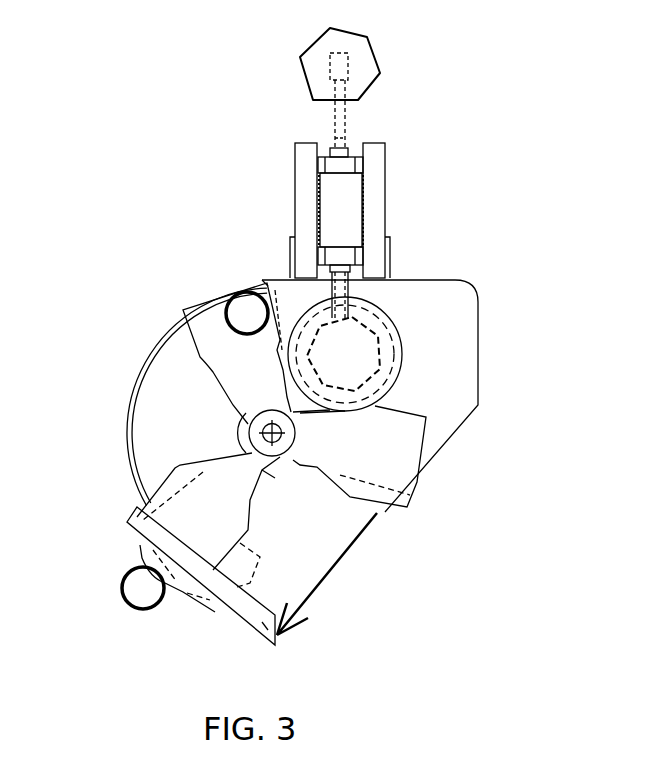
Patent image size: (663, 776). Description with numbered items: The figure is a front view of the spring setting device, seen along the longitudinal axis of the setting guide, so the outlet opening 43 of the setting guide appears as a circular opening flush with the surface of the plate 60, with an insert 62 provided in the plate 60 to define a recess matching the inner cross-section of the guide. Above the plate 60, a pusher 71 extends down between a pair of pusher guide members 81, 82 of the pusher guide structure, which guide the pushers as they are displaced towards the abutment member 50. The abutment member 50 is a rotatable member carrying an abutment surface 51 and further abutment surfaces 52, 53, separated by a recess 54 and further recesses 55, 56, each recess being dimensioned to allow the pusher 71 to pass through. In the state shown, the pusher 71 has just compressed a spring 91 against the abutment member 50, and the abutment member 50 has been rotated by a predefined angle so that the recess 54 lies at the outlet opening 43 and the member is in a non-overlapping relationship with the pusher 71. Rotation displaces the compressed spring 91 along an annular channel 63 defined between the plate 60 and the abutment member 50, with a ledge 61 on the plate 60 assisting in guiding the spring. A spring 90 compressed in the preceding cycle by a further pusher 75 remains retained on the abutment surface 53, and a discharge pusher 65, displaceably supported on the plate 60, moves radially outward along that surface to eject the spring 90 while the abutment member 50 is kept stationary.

The outlet opening 43 is at (386, 330).
The abutment member 50 is at (145, 502).
The abutment surface 51 is at (197, 310).
The further abutment surface 52 is at (416, 483).
The further abutment surface 53 is at (258, 524).
The recess 54 is at (335, 420).
The further recess 55 is at (286, 478).
The further recess 56 is at (227, 425).
The plate 60 is at (460, 430).
The ledge 61 is at (126, 405).
The insert 62 is at (402, 340).
The annular channel 63 is at (160, 356).
The discharge pusher 65 is at (192, 596).
The pusher 71 is at (375, 357).
The further pusher 75 is at (372, 88).
The pusher guide member 81 is at (295, 160).
The pusher guide member 82 is at (385, 198).
The spring 90 is at (125, 573).
The spring 91 is at (235, 302).